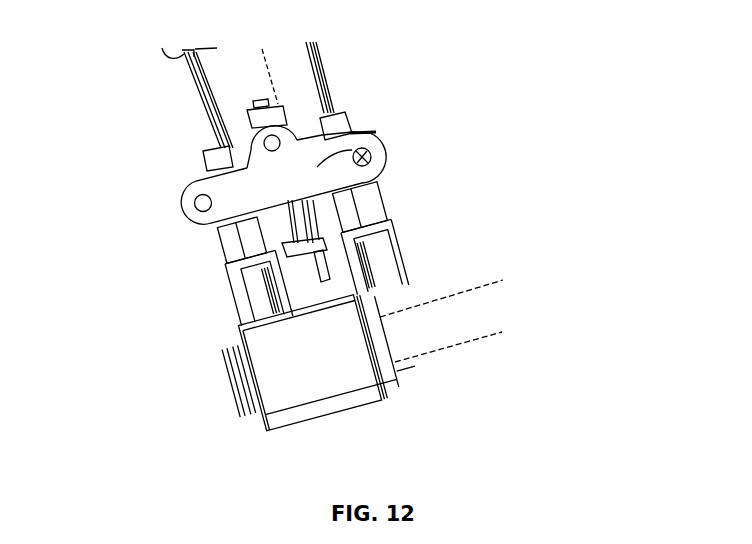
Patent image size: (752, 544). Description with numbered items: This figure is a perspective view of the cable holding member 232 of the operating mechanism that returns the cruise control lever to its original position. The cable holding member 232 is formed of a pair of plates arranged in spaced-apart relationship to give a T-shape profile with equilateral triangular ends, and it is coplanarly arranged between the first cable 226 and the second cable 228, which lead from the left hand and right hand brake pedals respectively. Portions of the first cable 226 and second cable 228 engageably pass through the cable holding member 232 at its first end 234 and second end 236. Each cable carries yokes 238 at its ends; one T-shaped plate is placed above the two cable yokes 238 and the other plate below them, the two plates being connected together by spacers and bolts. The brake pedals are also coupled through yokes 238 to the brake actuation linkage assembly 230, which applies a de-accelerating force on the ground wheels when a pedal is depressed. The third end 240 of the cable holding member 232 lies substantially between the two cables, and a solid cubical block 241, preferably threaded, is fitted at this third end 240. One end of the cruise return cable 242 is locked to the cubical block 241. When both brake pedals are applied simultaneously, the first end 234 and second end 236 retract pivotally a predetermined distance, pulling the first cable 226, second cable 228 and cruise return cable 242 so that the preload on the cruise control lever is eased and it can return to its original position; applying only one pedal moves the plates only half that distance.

The first cable 226 is at (192, 86).
The second cable 228 is at (331, 100).
The third end 240 is at (205, 161).
The solid cubical block 241 is at (282, 112).
The cable holding member 232 is at (374, 137).
The second end 236 is at (374, 167).
The first end 234 is at (194, 217).
The yokes 238 is at (240, 261).
The cruise return cable 242 is at (320, 285).
The brake actuation linkage assembly 230 is at (280, 383).